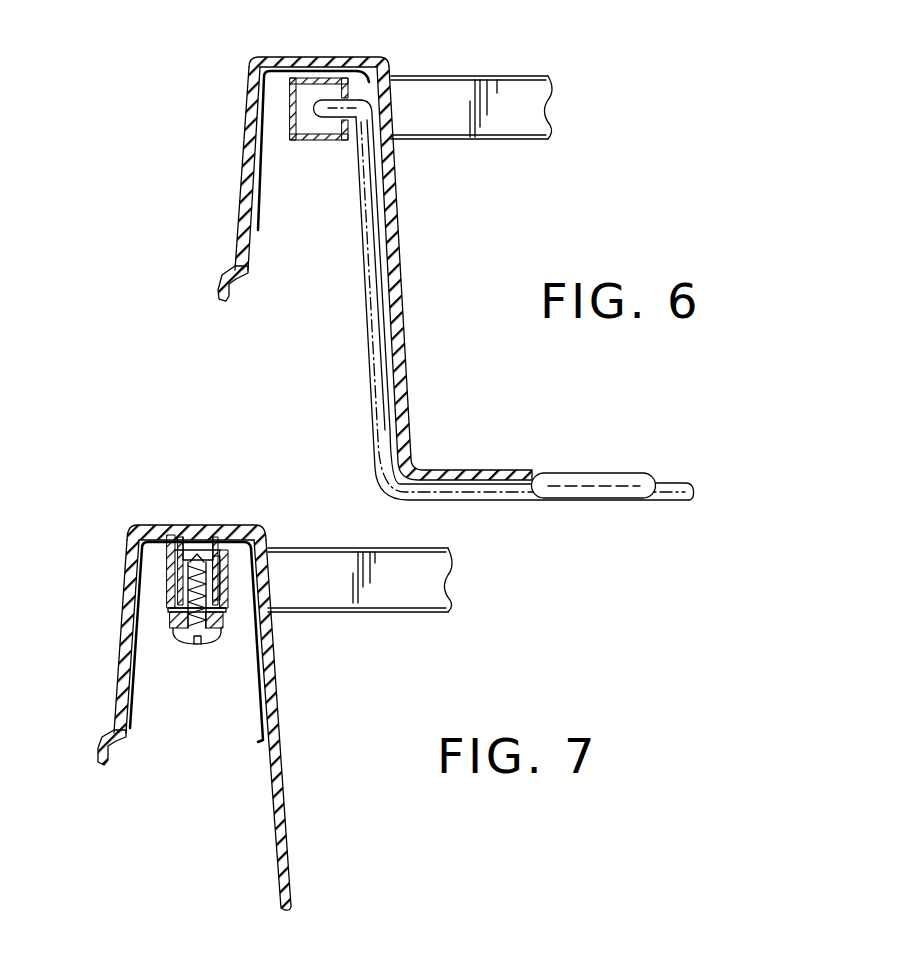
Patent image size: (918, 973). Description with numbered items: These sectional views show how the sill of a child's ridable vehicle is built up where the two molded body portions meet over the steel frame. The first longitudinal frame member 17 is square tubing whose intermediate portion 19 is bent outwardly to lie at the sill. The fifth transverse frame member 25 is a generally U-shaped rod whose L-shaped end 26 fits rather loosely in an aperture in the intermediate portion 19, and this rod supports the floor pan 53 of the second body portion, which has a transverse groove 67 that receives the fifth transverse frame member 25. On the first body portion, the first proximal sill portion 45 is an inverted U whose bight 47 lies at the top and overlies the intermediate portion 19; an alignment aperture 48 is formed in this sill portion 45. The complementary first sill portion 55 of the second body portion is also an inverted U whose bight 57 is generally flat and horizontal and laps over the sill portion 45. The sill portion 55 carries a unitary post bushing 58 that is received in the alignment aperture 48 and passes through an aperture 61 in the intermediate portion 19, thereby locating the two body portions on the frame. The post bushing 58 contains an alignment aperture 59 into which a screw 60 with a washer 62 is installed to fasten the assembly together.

In FIG. 6, the first longitudinal frame member 17 is at (458, 120).
In FIG. 6, the intermediate portion 19 is at (302, 139).
In FIG. 7, the intermediate portion 19 is at (230, 593).
In FIG. 6, the fifth transverse frame member 25 is at (373, 391).
In FIG. 6, the L-shaped end 26 is at (335, 104).
In FIG. 6, the first proximal sill portion 45 is at (251, 249).
In FIG. 7, the first proximal sill portion 45 is at (135, 717).
In FIG. 6, the bight 47 is at (280, 73).
In FIG. 7, the alignment aperture 48 is at (205, 535).
In FIG. 6, the floor pan 53 is at (407, 458).
In FIG. 7, the floor pan 53 is at (278, 680).
In FIG. 6, the first sill portion 55 is at (247, 87).
In FIG. 7, the first sill portion 55 is at (127, 570).
In FIG. 6, the bight 57 is at (294, 58).
In FIG. 7, the bight 57 is at (143, 525).
In FIG. 7, the post bushing 58 is at (178, 628).
In FIG. 7, the alignment aperture 59 is at (214, 560).
In FIG. 7, the screw 60 is at (207, 640).
In FIG. 7, the aperture 61 is at (195, 536).
In FIG. 7, the washer 62 is at (172, 614).
In FIG. 6, the transverse groove 67 is at (478, 483).